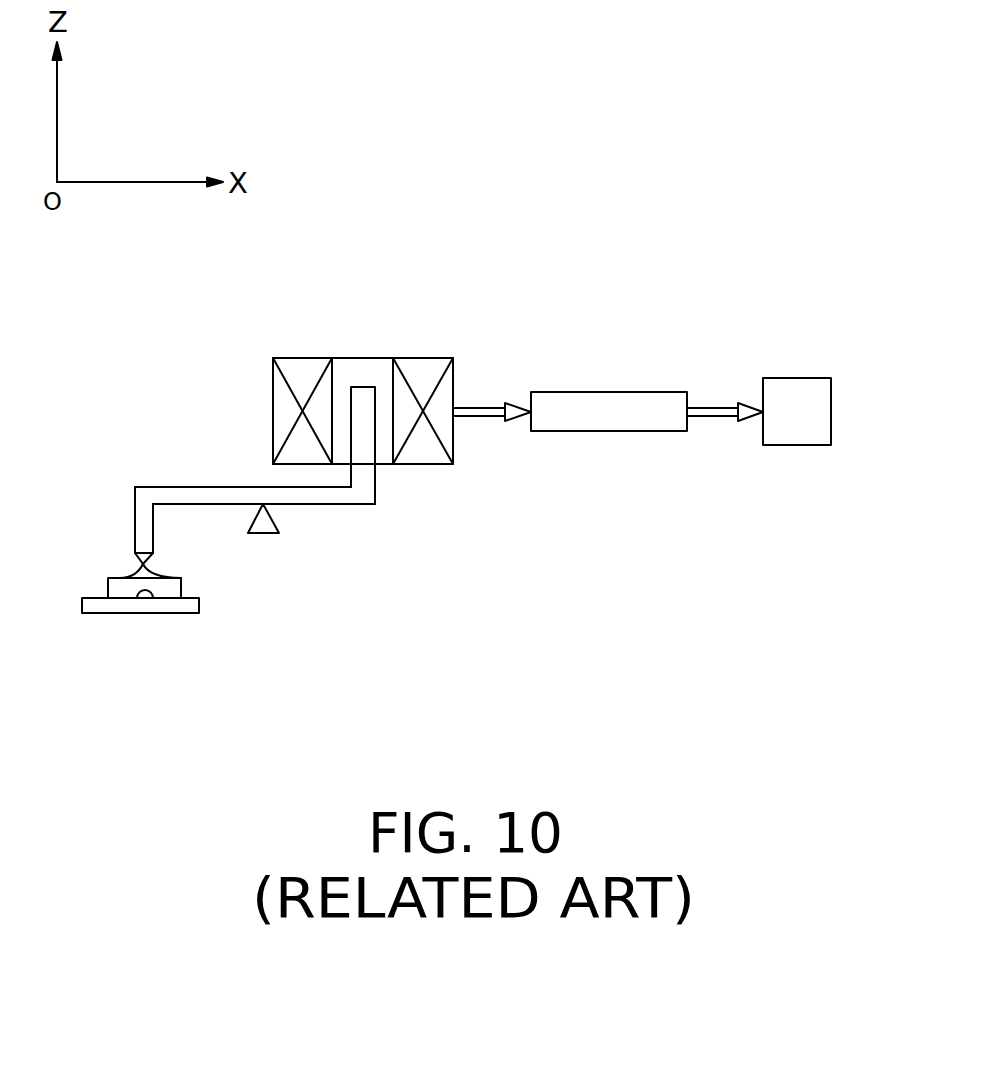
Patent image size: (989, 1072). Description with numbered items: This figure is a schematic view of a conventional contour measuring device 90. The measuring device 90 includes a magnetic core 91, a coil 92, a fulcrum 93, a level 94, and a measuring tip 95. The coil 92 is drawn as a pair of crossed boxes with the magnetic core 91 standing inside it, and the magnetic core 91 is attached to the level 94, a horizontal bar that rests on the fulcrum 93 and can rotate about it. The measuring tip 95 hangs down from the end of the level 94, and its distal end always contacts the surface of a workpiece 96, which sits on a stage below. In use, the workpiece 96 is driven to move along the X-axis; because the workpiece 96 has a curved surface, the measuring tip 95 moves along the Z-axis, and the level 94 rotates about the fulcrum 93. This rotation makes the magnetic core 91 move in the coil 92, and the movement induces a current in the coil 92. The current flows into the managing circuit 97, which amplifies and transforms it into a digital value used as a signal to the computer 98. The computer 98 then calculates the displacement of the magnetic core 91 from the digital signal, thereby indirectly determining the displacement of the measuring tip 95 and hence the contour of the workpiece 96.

The measuring device 90 is at (596, 228).
The magnetic core 91 is at (362, 403).
The coil 92 is at (298, 375).
The fulcrum 93 is at (266, 525).
The level 94 is at (223, 493).
The measuring tip 95 is at (139, 522).
The workpiece 96 is at (122, 587).
The managing circuit 97 is at (608, 406).
The computer 98 is at (789, 392).